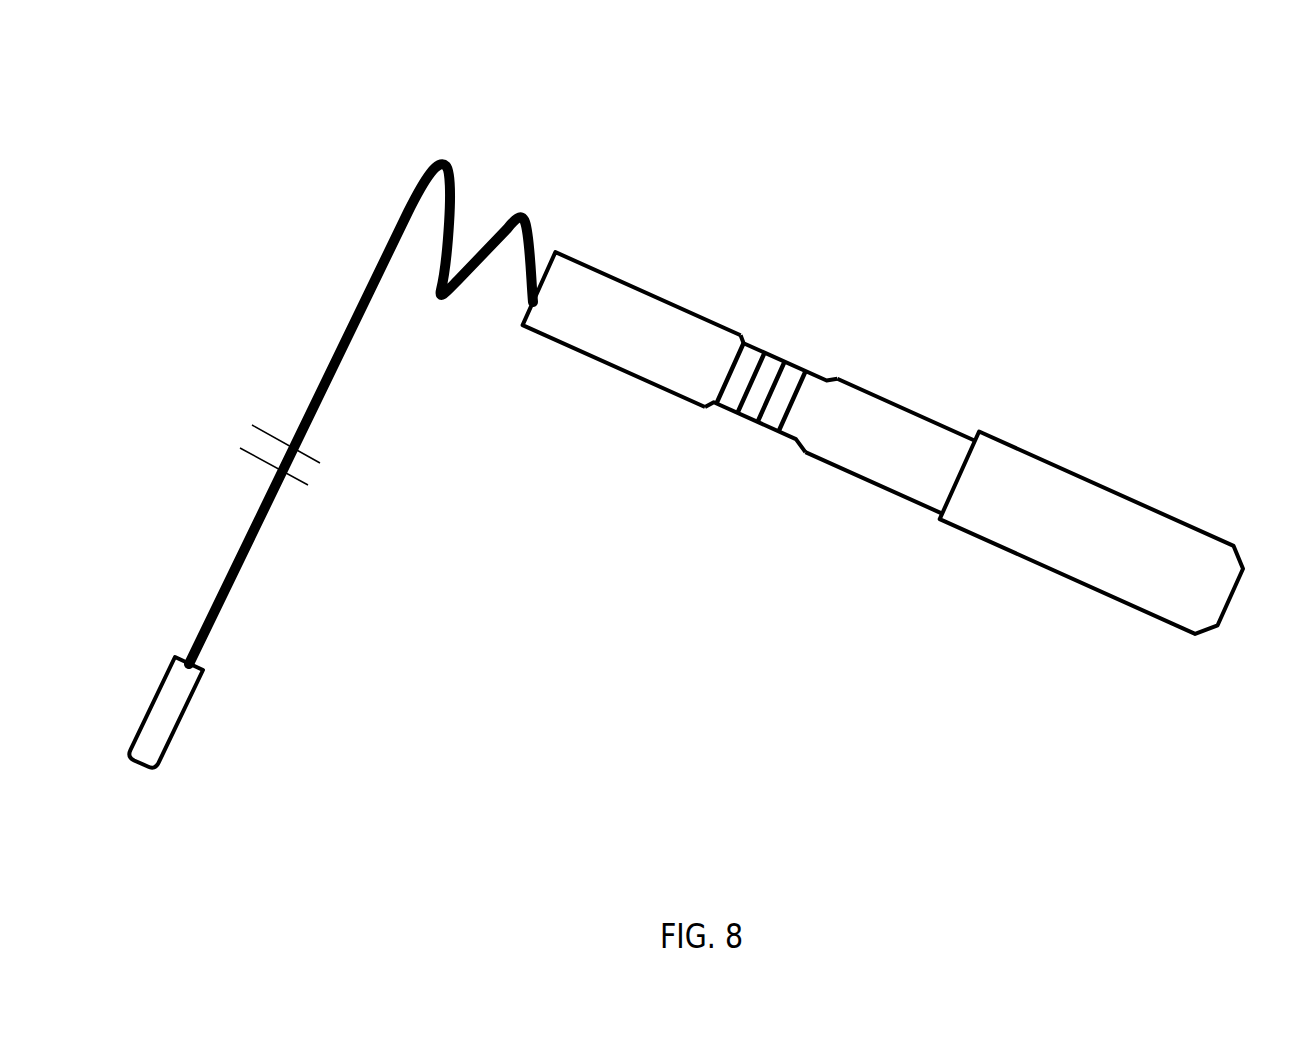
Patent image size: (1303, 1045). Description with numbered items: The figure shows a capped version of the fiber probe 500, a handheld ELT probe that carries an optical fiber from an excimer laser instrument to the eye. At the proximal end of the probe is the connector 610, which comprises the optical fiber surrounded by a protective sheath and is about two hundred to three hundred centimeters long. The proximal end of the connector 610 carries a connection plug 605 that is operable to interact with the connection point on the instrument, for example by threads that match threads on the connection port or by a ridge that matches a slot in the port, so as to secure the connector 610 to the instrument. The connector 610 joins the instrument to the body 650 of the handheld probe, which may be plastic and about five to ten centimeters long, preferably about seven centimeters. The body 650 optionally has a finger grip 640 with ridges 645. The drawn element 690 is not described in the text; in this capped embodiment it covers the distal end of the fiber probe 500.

The fiber probe 500 is at (851, 77).
The connection plug 605 is at (182, 720).
The connector 610 is at (447, 160).
The finger grip 640 is at (809, 336).
The ridges 645 is at (790, 363).
The body 650 is at (878, 387).
The handle 690 is at (1158, 510).